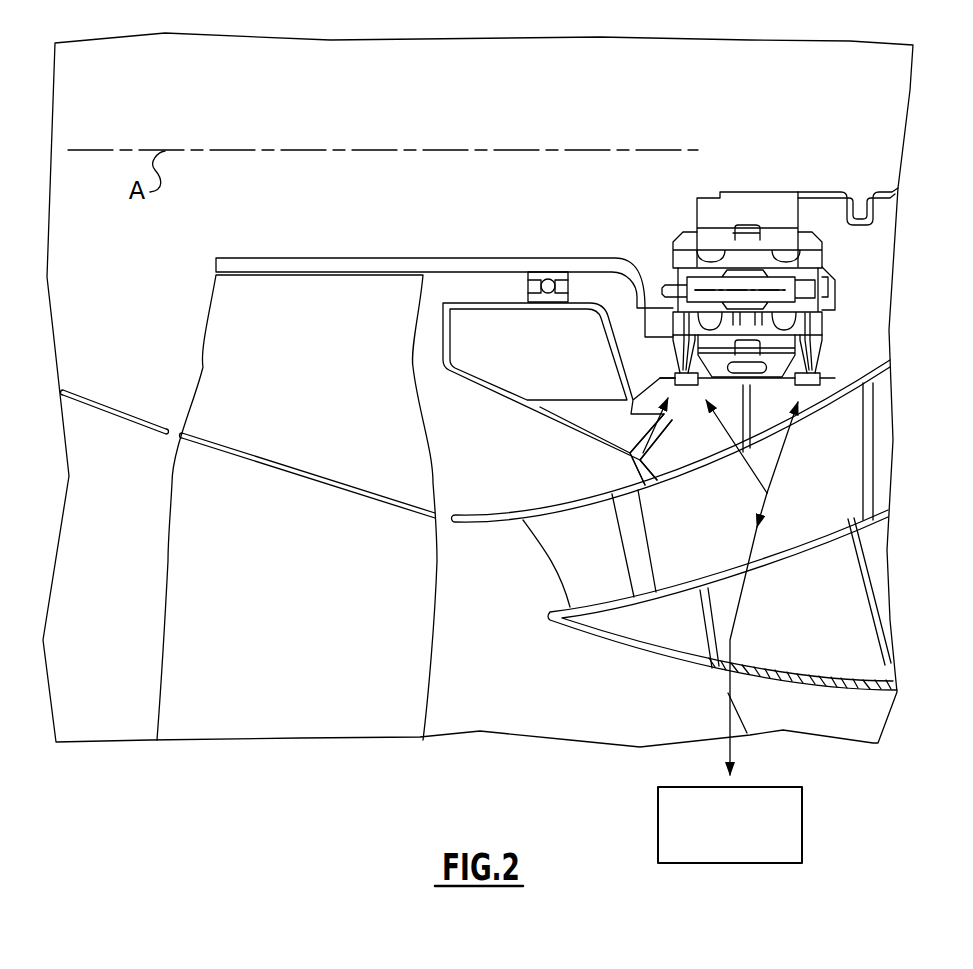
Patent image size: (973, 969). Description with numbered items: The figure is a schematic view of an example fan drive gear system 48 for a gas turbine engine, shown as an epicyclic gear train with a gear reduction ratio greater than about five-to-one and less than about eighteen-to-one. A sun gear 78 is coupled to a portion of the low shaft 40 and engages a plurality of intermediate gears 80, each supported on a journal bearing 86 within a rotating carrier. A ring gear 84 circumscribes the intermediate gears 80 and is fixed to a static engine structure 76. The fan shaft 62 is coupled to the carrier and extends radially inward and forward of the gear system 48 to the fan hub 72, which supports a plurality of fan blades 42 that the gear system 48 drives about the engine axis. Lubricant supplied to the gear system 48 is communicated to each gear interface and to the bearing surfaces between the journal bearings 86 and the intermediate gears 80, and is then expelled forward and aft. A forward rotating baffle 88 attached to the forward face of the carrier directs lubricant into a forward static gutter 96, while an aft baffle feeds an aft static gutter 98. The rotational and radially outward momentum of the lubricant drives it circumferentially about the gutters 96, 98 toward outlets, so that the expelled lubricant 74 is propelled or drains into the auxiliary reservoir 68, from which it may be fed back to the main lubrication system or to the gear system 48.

The low shaft 40 is at (780, 190).
The fan blades 42 is at (275, 638).
The fan drive gear system 48 is at (788, 289).
The fan shaft 62 is at (408, 265).
The auxiliary reservoir 68 is at (802, 840).
The fan hub 72 is at (227, 378).
The expelled lubricant 74 is at (725, 718).
The static engine structure 76 is at (575, 516).
The sun gear 78 is at (708, 218).
The intermediate gears 80 is at (710, 248).
The ring gear 84 is at (773, 360).
The journal bearing 86 is at (840, 295).
The forward rotating baffle 88 is at (660, 363).
The forward static gutter 96 is at (632, 458).
The aft static gutter 98 is at (823, 400).